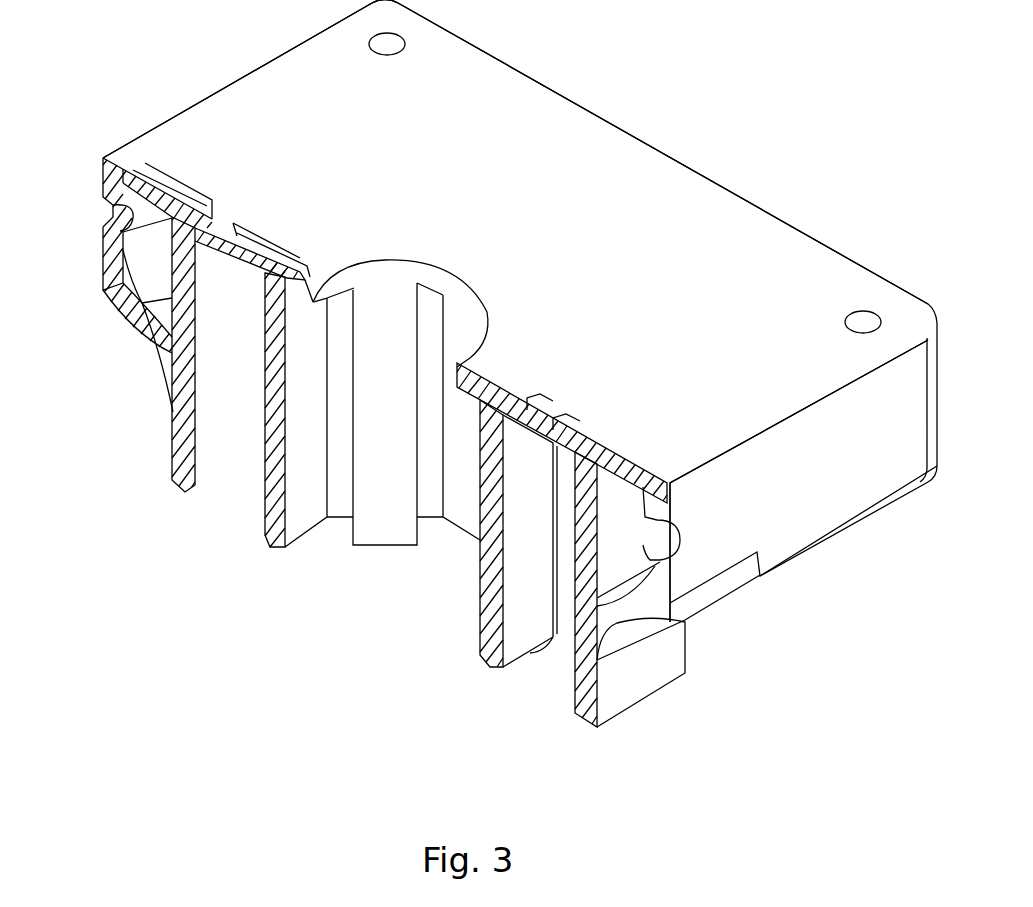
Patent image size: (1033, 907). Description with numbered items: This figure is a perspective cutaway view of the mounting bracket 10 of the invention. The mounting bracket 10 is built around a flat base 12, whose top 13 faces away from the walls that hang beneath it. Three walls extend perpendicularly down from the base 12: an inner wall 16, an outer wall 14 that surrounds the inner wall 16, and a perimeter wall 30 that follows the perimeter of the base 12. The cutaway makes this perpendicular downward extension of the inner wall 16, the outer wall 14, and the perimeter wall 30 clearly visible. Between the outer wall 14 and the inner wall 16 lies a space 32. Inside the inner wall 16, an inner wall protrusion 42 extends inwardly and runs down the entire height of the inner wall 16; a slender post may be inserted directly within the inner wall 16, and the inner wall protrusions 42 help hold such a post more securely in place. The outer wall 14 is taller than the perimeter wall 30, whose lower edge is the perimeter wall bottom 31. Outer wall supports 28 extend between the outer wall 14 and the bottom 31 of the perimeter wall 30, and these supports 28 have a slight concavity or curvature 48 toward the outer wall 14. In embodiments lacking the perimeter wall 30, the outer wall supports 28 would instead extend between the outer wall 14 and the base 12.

The mounting bracket 10 is at (826, 127).
The flat base 12 is at (613, 143).
The top 13 is at (535, 215).
The outer wall 14 is at (586, 730).
The inner wall 16 is at (490, 670).
The outer wall supports 28 is at (132, 308).
The perimeter wall 30 is at (808, 503).
The perimeter wall bottom 31 is at (102, 293).
The space 32 is at (240, 515).
The inner wall protrusion 42 is at (390, 538).
The concavity or curvature 48 is at (150, 333).